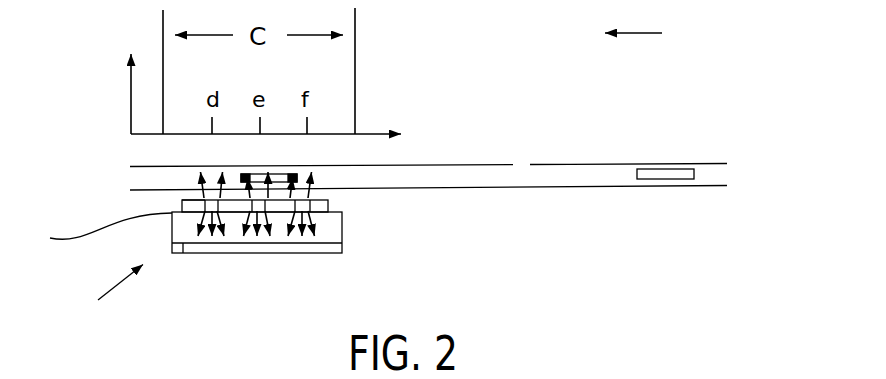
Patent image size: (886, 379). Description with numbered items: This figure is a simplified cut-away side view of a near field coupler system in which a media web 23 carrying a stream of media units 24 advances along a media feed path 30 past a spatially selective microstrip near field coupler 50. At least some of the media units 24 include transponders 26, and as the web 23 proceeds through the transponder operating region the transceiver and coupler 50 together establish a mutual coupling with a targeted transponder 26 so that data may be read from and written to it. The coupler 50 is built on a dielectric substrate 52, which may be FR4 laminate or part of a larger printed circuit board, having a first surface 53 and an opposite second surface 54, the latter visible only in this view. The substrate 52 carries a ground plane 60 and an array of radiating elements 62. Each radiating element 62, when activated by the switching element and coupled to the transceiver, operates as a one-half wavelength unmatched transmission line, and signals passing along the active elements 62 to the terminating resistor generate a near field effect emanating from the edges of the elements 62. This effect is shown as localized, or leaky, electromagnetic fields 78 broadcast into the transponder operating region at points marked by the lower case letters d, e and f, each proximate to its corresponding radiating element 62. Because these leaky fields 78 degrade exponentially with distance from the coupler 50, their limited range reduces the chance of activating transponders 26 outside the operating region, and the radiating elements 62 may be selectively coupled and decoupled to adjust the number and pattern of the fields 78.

The strip / substrate web 23 is at (575, 187).
The media unit 24 is at (467, 163).
The transponder 26 is at (299, 167).
The media feed path 30 is at (649, 31).
The near field coupler 50 is at (106, 295).
The dielectric substrate 52 is at (335, 233).
The first surface 53 is at (97, 230).
The second surface 54 is at (183, 246).
The ground plane 60 is at (215, 248).
The radiating element 62 is at (207, 206).
The localized electromagnetic field 78 is at (306, 193).